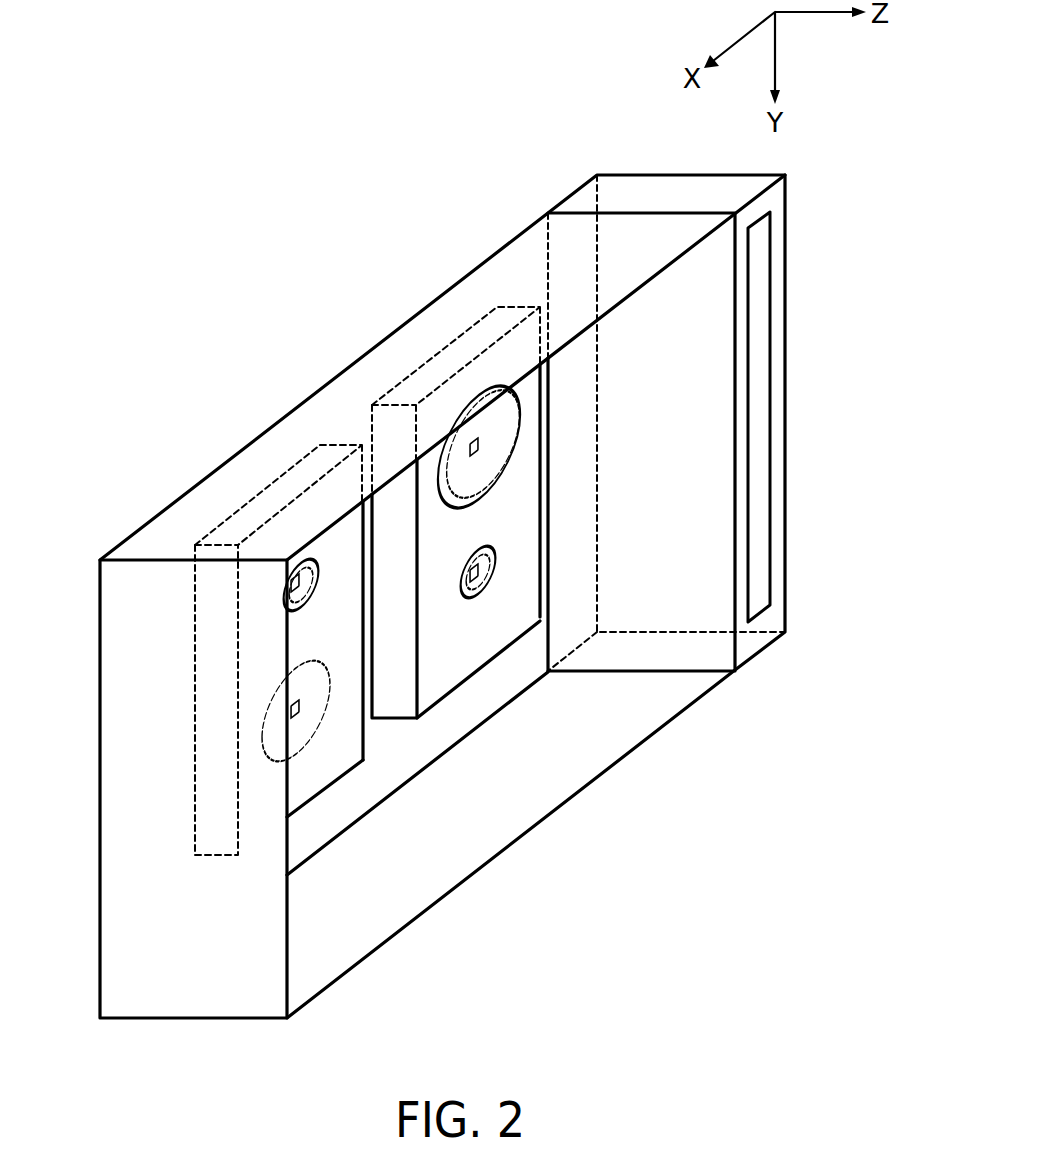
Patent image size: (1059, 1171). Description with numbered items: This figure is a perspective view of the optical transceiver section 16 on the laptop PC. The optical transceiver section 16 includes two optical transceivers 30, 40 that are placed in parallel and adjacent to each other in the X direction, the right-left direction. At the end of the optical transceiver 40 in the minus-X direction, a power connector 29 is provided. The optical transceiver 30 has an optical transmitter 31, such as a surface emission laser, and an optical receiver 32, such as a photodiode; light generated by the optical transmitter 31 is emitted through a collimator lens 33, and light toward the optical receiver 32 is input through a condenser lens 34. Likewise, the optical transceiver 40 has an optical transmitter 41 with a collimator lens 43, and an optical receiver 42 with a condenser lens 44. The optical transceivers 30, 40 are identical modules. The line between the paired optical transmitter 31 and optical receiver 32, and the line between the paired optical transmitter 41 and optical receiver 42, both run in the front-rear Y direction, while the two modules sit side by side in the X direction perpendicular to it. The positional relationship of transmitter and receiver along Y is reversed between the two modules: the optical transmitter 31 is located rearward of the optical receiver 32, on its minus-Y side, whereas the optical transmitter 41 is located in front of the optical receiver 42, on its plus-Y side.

The optical transceiver section 16 is at (588, 148).
The power connector 29 is at (778, 309).
The optical transceiver 30 is at (275, 498).
The optical transmitter 31 is at (291, 584).
The optical receiver 32 is at (291, 710).
The collimator lens 33 is at (311, 611).
The condenser lens 34 is at (311, 771).
The optical transceiver 40 is at (445, 365).
The optical transmitter 41 is at (476, 576).
The optical receiver 42 is at (479, 450).
The collimator lens 43 is at (497, 572).
The condenser lens 44 is at (520, 440).